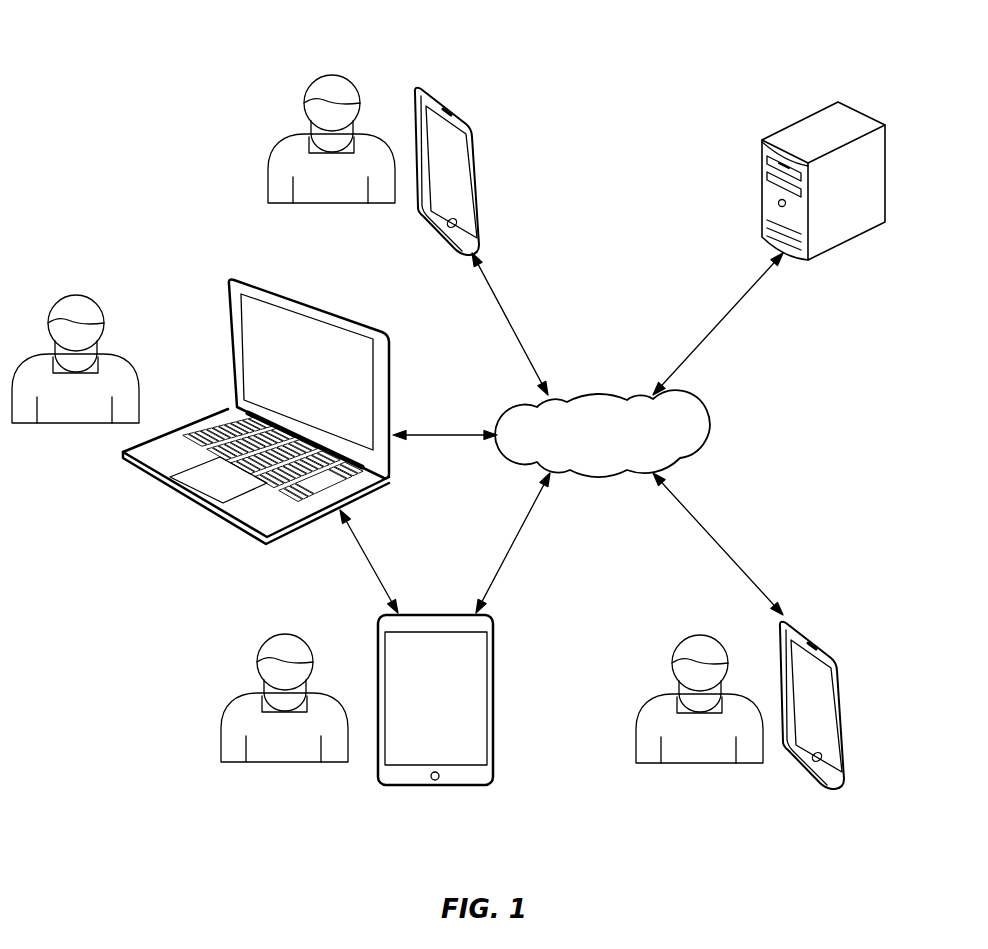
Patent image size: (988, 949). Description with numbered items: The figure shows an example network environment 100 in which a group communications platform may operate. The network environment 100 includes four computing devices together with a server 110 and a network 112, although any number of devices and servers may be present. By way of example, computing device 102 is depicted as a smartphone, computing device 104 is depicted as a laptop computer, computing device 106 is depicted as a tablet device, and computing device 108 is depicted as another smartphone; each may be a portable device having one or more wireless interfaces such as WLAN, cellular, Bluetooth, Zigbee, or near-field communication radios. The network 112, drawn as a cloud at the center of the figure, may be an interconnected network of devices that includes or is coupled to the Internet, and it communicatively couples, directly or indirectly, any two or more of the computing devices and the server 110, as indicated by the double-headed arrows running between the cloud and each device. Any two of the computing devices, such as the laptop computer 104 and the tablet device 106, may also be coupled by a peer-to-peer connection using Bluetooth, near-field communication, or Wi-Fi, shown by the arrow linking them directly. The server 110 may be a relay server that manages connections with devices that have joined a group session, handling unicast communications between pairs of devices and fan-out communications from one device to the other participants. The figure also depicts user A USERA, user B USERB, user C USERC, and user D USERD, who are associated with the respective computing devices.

The network environment 100 is at (157, 28).
The computing device 102 is at (478, 188).
The computing device 104 is at (390, 372).
The computing device 106 is at (448, 787).
The computing device 108 is at (840, 715).
The server 110 is at (798, 118).
The network 112 is at (598, 392).
The user A USERA is at (268, 170).
The user B USERB is at (53, 423).
The user C USERC is at (222, 733).
The user D USERD is at (670, 677).